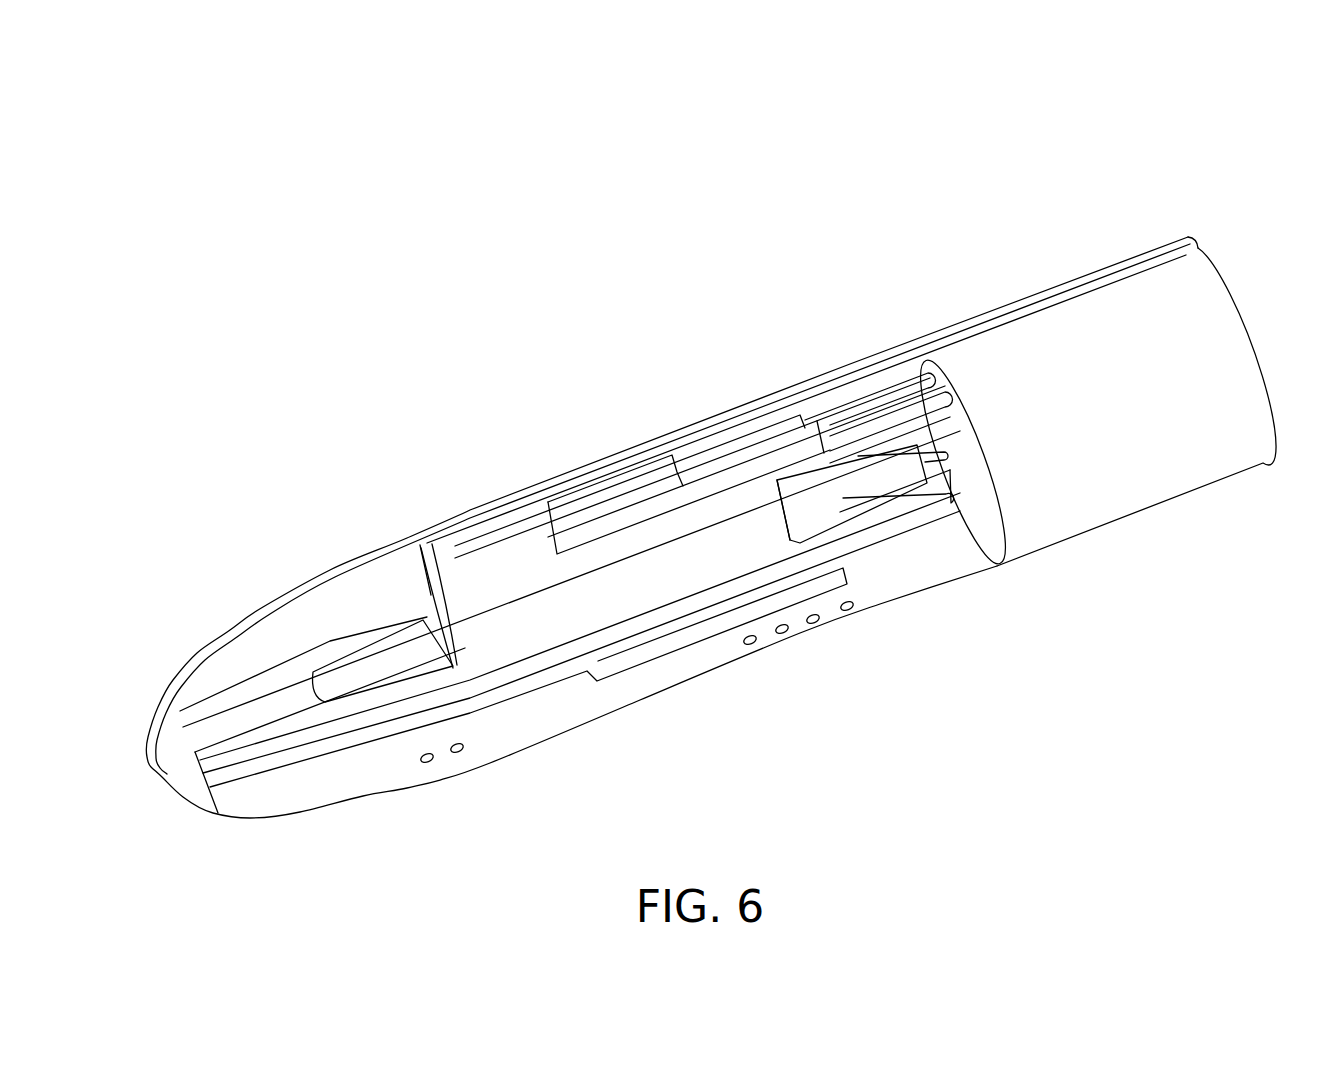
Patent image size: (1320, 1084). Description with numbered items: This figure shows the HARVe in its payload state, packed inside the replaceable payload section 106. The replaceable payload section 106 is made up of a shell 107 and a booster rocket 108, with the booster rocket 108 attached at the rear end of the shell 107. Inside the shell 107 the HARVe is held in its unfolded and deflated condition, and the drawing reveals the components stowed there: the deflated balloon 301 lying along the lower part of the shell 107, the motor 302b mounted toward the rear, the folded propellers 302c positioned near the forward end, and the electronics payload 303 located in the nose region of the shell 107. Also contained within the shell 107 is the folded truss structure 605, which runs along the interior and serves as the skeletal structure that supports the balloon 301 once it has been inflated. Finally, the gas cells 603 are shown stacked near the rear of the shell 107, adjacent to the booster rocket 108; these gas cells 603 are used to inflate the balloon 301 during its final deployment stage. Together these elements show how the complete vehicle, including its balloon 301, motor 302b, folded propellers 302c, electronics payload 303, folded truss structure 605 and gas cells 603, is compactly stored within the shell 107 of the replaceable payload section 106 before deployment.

The replaceable payload section 106 is at (1101, 166).
The shell 107 is at (220, 627).
The booster rocket 108 is at (1110, 455).
The balloon 301 is at (513, 728).
The motor 302b is at (859, 496).
The folded propellers 302c is at (340, 731).
The electronics payload 303 is at (182, 752).
The gas cells 603 is at (746, 442).
The folded truss structure 605 is at (521, 612).